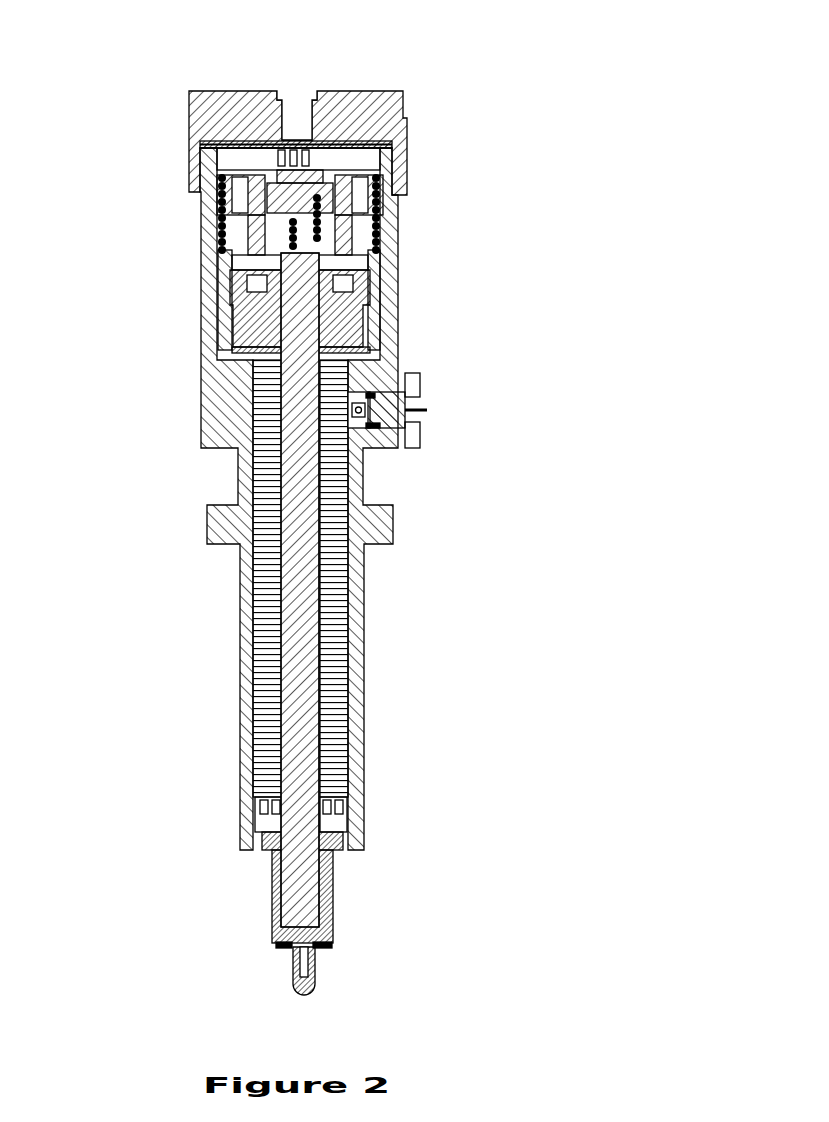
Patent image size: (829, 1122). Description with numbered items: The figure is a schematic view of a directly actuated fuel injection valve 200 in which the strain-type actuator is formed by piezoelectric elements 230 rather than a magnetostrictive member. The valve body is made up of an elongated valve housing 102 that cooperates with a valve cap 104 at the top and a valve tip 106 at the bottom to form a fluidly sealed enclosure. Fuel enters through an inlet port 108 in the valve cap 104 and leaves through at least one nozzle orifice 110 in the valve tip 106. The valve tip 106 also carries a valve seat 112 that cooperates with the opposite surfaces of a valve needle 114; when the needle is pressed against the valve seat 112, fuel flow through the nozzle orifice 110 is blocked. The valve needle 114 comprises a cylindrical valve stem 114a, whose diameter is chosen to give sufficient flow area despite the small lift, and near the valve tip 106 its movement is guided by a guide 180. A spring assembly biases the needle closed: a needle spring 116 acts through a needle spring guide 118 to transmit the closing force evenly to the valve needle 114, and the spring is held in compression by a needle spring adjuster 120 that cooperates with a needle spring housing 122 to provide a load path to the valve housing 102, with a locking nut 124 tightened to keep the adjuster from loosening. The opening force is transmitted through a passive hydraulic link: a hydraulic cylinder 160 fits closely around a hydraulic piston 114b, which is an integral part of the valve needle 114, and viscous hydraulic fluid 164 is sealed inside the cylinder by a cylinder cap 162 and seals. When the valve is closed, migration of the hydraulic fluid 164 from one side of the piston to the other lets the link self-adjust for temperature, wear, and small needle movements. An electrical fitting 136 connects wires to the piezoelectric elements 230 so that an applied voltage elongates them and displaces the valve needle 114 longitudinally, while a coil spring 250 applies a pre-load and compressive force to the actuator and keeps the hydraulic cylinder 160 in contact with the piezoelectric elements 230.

The fuel injection valve 200 is at (140, 60).
The valve housing 102 is at (215, 430).
The valve cap 104 is at (393, 108).
The valve tip 106 is at (335, 858).
The inlet port 108 is at (318, 96).
The nozzle orifice 110 is at (296, 990).
The valve seat 112 is at (325, 922).
The valve needle 114 is at (318, 522).
The valve stem 114a is at (322, 638).
The hydraulic piston 114b is at (350, 292).
The needle spring 116 is at (245, 172).
The needle spring guide 118 is at (335, 226).
The needle spring adjuster 120 is at (265, 140).
The needle spring housing 122 is at (350, 163).
The locking nut 124 is at (392, 146).
The electrical fitting 136 is at (400, 400).
The hydraulic cylinder 160 is at (340, 335).
The cylinder cap 162 is at (226, 262).
The hydraulic fluid 164 is at (232, 296).
The guide 180 is at (333, 806).
The piezoelectric elements 230 is at (270, 665).
The coil spring 250 is at (382, 242).